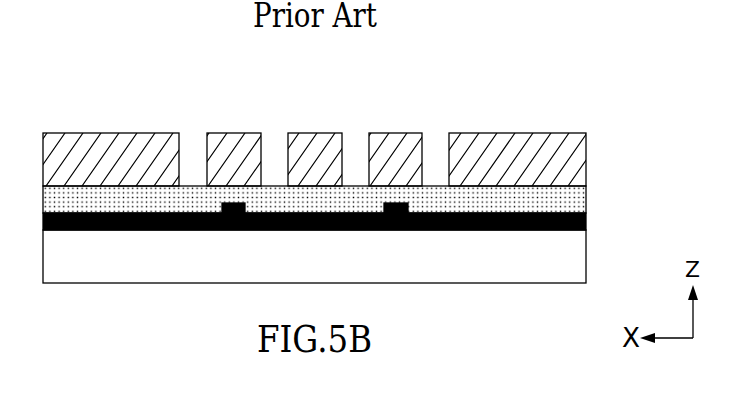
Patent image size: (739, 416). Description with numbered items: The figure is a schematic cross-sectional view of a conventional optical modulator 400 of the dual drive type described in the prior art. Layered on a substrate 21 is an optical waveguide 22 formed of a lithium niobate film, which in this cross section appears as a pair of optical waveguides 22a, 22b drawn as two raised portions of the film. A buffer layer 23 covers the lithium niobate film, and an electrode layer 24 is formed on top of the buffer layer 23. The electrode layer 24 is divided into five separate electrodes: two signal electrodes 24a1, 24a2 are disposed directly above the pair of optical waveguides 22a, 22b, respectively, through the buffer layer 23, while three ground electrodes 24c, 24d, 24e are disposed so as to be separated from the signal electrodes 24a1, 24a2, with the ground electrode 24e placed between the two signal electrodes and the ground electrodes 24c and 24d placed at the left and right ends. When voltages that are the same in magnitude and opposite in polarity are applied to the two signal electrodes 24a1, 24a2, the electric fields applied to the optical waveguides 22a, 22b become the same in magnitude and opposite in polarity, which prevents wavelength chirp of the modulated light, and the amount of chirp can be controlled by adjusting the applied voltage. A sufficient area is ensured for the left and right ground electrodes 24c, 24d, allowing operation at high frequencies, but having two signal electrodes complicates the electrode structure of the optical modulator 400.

The optical modulator 400 is at (552, 29).
The substrate 21 is at (585, 258).
The optical waveguide 22 is at (585, 223).
The optical waveguide 22a is at (222, 212).
The optical waveguide 22b is at (408, 212).
The buffer layer 23 is at (585, 198).
The upper layer 24 is at (321, 133).
The ground electrode 24c is at (112, 133).
The signal electrode 24a1 is at (233, 133).
The ground electrode 24e is at (316, 133).
The signal electrode 24a2 is at (395, 133).
The ground electrode 24d is at (520, 133).